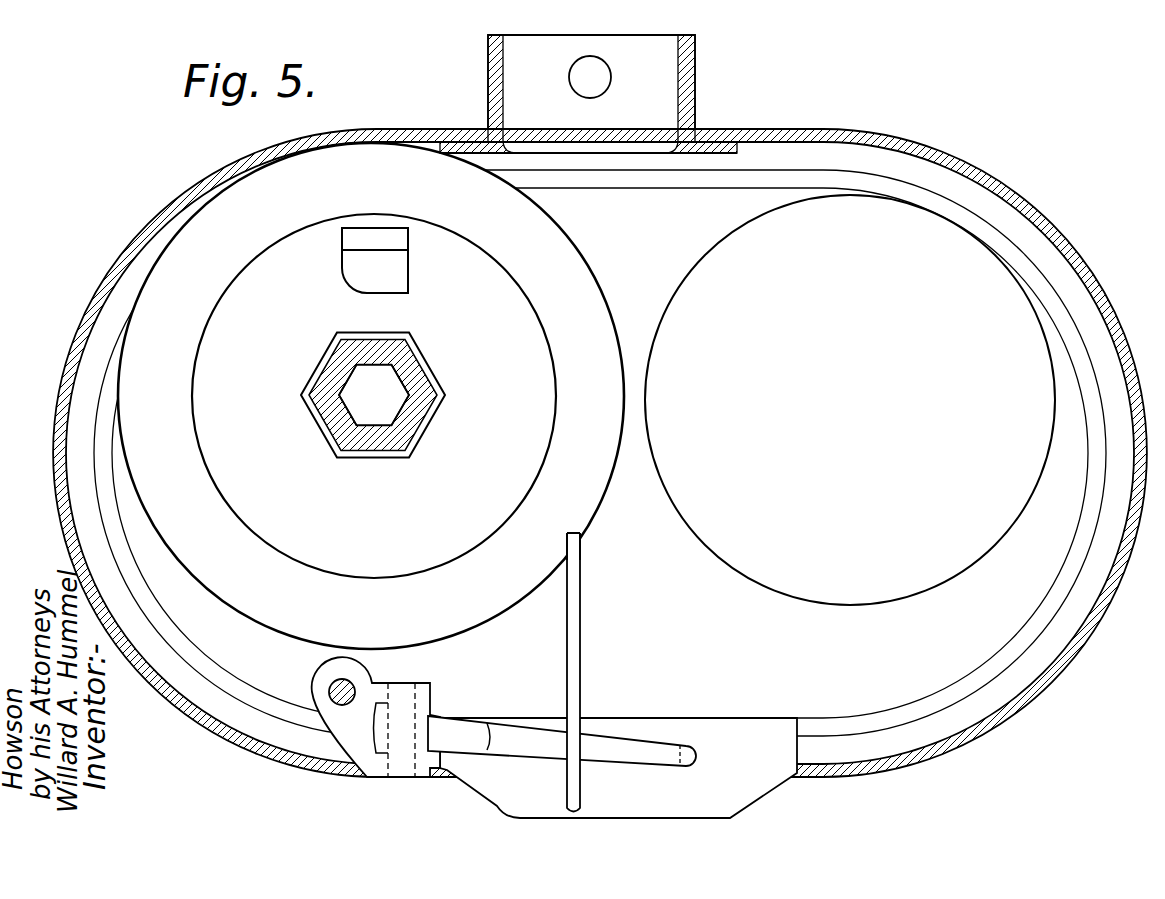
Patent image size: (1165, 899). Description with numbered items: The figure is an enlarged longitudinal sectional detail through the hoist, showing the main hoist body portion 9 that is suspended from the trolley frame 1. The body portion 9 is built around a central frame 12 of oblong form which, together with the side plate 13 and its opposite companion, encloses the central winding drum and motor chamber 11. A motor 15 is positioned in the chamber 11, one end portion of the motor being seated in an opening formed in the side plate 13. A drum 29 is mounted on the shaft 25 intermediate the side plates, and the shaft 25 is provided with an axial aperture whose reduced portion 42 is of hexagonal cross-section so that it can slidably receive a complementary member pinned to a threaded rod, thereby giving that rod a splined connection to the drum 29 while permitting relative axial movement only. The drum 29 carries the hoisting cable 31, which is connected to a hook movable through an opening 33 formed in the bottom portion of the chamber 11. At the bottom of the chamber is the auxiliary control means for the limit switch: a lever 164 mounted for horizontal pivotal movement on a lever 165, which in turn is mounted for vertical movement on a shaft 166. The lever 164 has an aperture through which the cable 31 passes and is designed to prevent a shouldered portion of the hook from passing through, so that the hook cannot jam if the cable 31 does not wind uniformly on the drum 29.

The trolley frame 1 is at (628, 58).
The main hoist body portion 9 is at (600, 453).
The central winding drum and motor chamber 11 is at (600, 453).
The central frame 12 is at (1068, 650).
The side plate 13 is at (664, 732).
The motor 15 is at (952, 578).
The drum shaft 25 is at (404, 356).
The drum 29 is at (570, 537).
The cable 31 is at (572, 645).
The opening 33 is at (560, 759).
The reduced portion 42 is at (387, 405).
The lever 164 is at (608, 747).
The lever 165 is at (368, 687).
The shaft 166 is at (330, 684).